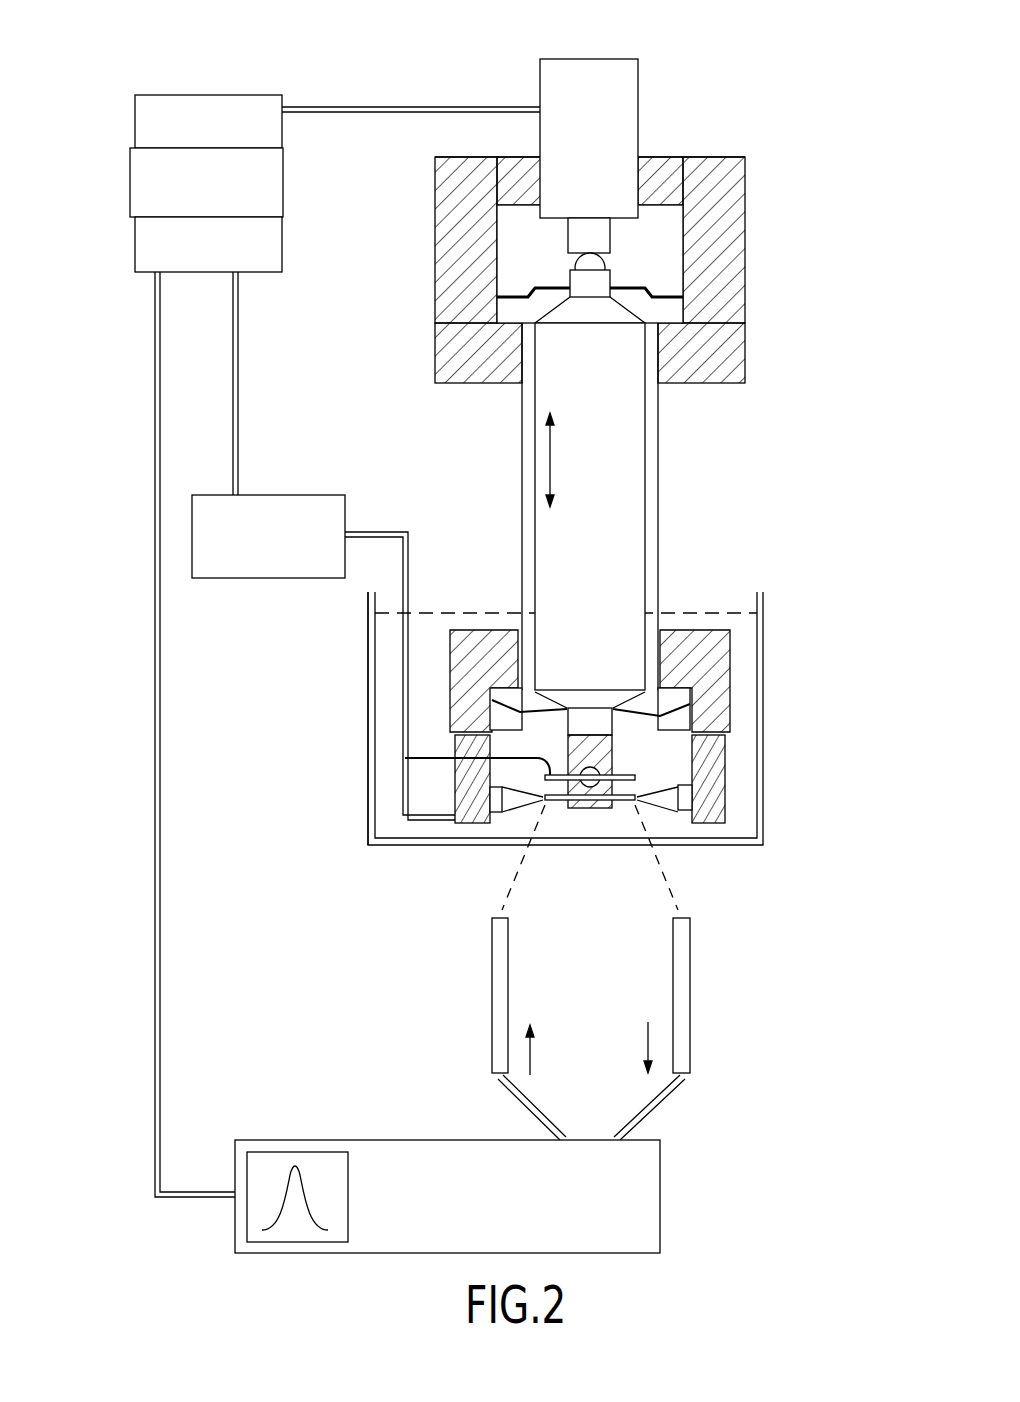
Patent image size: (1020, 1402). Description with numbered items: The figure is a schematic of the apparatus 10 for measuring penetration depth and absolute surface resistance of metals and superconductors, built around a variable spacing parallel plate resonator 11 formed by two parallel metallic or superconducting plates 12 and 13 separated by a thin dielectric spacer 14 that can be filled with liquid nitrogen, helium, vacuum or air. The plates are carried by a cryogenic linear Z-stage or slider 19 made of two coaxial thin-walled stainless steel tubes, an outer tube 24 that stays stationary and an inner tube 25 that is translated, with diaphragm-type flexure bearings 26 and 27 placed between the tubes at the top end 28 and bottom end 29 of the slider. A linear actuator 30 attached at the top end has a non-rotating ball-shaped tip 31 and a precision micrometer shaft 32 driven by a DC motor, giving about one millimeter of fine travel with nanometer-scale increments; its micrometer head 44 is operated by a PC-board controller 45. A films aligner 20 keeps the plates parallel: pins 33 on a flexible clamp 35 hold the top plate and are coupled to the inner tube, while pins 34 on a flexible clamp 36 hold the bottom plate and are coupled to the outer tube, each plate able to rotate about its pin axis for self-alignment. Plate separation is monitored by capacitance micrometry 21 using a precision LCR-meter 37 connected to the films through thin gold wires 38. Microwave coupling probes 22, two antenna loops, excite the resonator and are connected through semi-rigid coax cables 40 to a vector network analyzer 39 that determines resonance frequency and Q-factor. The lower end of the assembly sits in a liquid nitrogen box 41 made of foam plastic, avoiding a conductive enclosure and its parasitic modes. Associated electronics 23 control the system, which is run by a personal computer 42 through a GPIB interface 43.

The apparatus 10 is at (798, 100).
The variable spacing parallel plate resonator 11 is at (510, 800).
The top plate 12 is at (640, 777).
The bottom plate 13 is at (652, 800).
The dielectric spacer 14 is at (725, 787).
The cryogenic linear Z-stage 19 is at (682, 447).
The films aligner 20 is at (737, 805).
The capacitance micrometry 21 is at (310, 485).
The microwave coupling probes 22 is at (498, 908).
The associated electronics 23 is at (125, 328).
The outer tube 24 is at (659, 493).
The inner tube 25 is at (647, 583).
The flexure bearing 26 is at (668, 290).
The flexure bearing 27 is at (540, 712).
The top end 28 is at (662, 227).
The bottom end 29 is at (492, 697).
The linear actuator 30 is at (502, 93).
The ball-shaped tip 31 is at (570, 270).
The micrometer shaft 32 is at (572, 242).
The pins 33 is at (590, 785).
The pins 34 is at (490, 823).
The flexible clamp 35 is at (675, 712).
The flexible clamp 36 is at (600, 748).
The LCR-meter 37 is at (267, 563).
The gold wires 38 is at (550, 770).
The vector network analyzer 39 is at (660, 1192).
The semi-rigid coax cables 40 is at (498, 1043).
The liquid nitrogen box 41 is at (368, 715).
The personal computer 42 is at (130, 185).
The GPIB interface 43 is at (135, 250).
The micrometer head 44 is at (622, 88).
The PC-board controller 45 is at (135, 95).